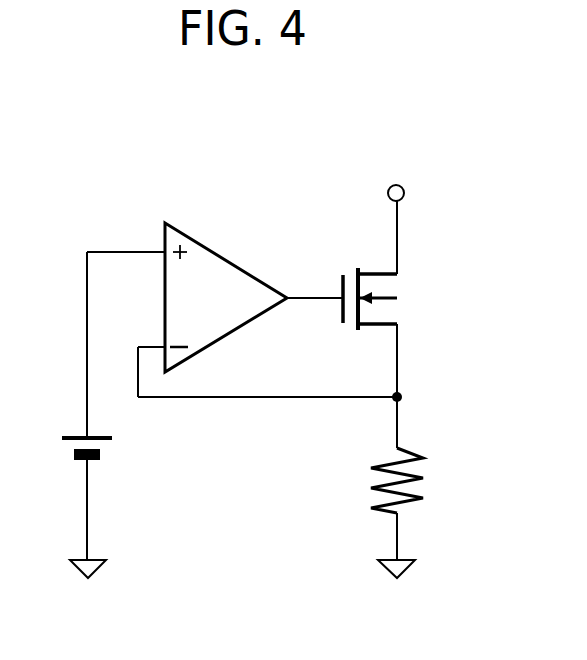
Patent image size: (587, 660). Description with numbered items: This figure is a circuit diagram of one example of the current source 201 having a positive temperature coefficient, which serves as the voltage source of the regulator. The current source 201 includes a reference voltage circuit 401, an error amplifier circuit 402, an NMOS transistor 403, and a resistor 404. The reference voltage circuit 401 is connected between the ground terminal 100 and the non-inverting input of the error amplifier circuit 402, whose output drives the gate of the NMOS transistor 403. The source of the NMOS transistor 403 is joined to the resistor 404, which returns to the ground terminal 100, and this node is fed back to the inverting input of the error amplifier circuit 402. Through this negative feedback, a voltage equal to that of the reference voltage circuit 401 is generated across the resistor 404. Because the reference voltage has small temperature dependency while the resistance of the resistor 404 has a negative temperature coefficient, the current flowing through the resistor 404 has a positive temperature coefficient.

The current source 201 is at (286, 172).
The error amplifier circuit 402 is at (227, 260).
The NMOS transistor 403 is at (403, 298).
The resistor 404 is at (372, 487).
The reference voltage circuit 401 is at (68, 433).
The ground terminal 100 is at (87, 583).